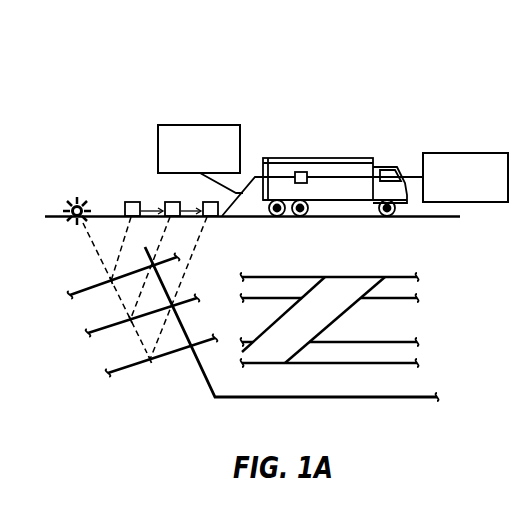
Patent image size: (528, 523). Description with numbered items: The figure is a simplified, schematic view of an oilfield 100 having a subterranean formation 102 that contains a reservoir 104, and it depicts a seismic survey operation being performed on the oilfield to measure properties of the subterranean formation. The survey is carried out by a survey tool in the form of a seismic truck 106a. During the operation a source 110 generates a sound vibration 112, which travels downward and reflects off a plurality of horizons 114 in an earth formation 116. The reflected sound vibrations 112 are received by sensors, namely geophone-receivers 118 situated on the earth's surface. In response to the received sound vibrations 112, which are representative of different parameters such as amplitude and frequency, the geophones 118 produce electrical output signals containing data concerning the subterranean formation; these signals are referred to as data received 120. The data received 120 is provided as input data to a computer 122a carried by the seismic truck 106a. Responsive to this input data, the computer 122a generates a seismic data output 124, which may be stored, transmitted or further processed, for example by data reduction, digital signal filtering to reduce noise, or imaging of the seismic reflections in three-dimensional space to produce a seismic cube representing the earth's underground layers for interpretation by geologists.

The oilfield 100 is at (455, 132).
The subterranean formation 102 is at (393, 270).
The reservoir 104 is at (400, 328).
The seismic truck 106a is at (367, 158).
The source 110 is at (71, 201).
The sound vibration 112 is at (123, 249).
The horizons 114 is at (80, 287).
The earth formation 116 is at (200, 372).
The geophone-receivers 118 is at (204, 203).
The data received 120 is at (180, 125).
The computer 122a is at (304, 172).
The seismic data output 124 is at (477, 153).